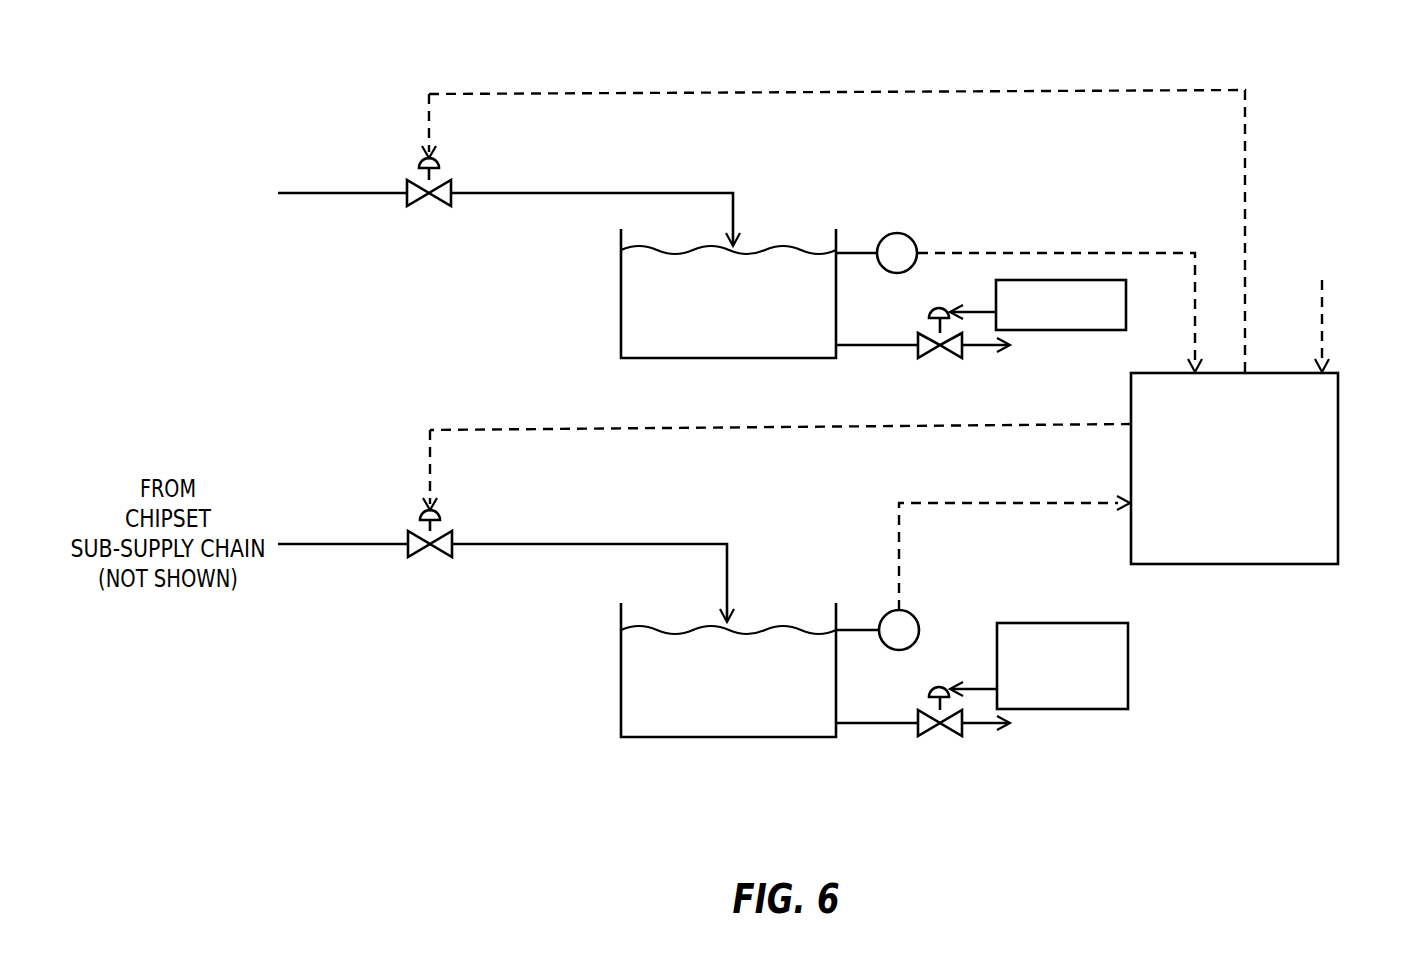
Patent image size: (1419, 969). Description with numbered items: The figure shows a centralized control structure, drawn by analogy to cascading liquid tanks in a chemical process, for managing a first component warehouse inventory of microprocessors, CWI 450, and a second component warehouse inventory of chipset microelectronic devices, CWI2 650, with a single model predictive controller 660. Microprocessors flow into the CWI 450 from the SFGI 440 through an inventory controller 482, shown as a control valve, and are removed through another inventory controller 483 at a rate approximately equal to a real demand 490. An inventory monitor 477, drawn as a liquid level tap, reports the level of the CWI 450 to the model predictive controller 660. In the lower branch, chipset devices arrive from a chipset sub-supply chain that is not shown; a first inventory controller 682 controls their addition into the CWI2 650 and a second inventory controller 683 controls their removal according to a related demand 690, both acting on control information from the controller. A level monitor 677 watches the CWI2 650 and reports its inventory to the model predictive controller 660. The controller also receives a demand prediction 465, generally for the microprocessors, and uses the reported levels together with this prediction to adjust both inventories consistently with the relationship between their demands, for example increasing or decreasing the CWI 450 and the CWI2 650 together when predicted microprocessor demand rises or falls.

The SFGI 440 is at (304, 183).
The inventory controller 482 is at (438, 166).
The component warehouse inventory of microprocessors (CWI) 450 is at (750, 347).
The inventory monitor 477 is at (908, 237).
The inventory controller 483 is at (929, 314).
The real demand 490 is at (1087, 330).
The model predictive controller 660 is at (1257, 540).
The demand prediction 465 is at (1322, 323).
The first inventory controller 682 is at (439, 518).
The component warehouse inventory of chipset microelectronic devices (CWI2) 650 is at (752, 726).
The level monitor 677 is at (899, 650).
The second inventory controller 683 is at (939, 687).
The related demand 690 is at (1087, 709).